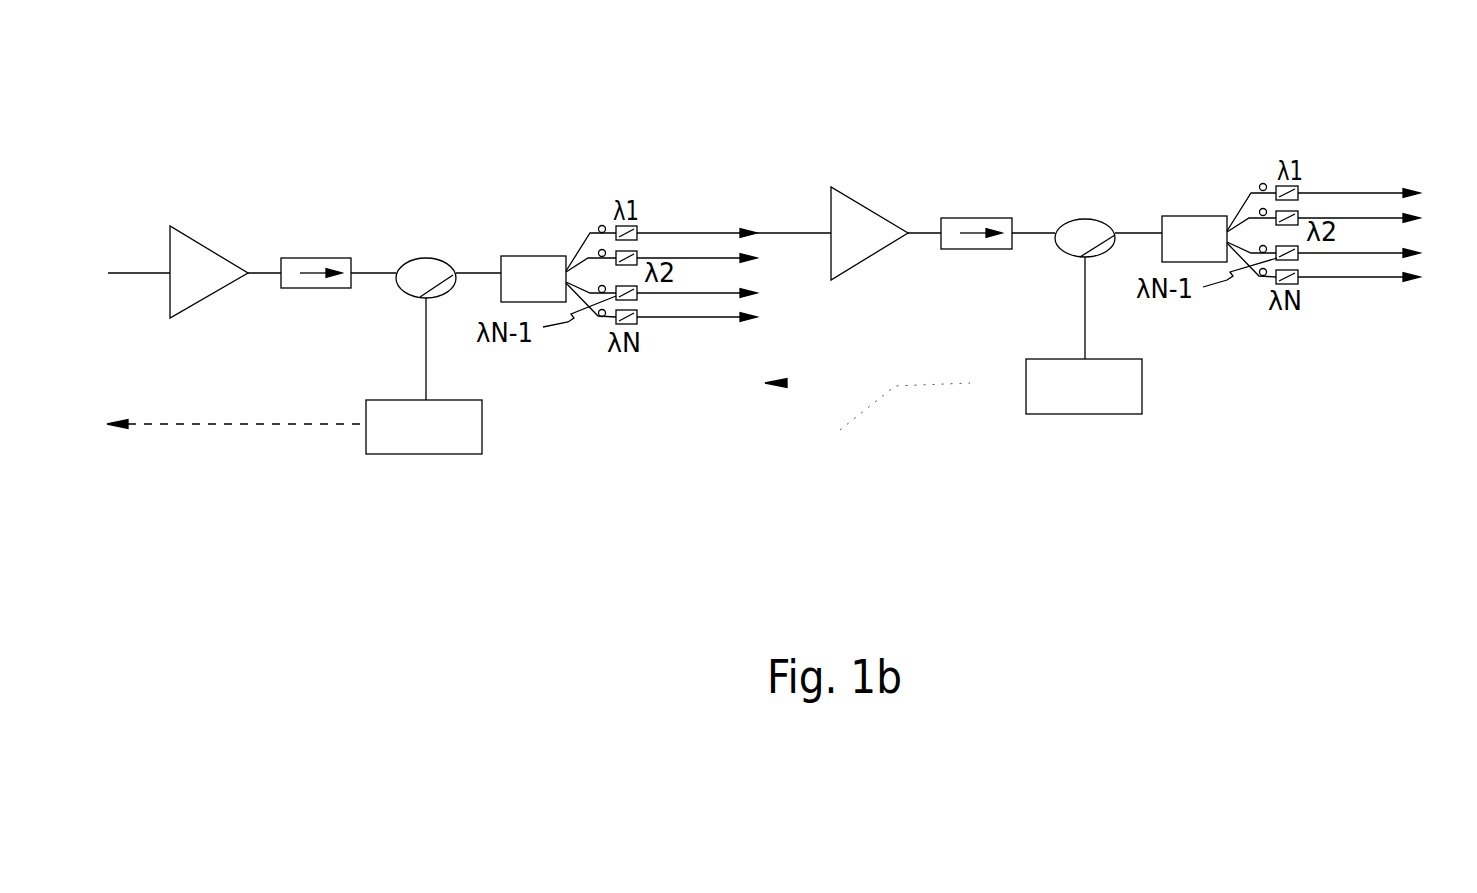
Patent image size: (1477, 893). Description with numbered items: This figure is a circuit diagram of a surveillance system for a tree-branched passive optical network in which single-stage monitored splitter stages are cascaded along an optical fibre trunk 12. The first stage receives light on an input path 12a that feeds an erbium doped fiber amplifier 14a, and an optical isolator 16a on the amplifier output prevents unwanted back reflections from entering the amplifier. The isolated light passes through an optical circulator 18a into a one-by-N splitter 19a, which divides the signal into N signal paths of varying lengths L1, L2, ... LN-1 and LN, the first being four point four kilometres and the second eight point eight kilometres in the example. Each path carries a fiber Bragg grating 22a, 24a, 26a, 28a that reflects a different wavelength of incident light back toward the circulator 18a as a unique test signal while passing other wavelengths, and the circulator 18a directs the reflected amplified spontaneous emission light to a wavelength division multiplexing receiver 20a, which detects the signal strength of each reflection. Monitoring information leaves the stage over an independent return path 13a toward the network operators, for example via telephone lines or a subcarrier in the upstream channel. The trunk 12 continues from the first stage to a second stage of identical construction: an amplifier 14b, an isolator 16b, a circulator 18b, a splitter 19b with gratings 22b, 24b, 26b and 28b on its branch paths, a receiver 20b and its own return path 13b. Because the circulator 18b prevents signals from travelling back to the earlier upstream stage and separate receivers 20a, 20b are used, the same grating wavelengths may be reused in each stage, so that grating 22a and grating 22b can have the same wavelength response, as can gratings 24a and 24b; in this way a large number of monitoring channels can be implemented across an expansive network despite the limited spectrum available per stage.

The optical fibre trunk 12 is at (800, 233).
The input path 12a is at (123, 272).
The erbium doped fiber amplifier 14a is at (207, 253).
The optical isolator 16a is at (313, 260).
The optical circulator 18a is at (407, 290).
The 1×N splitter 19a is at (538, 268).
The WDM receiver 20a is at (407, 443).
The return monitoring signal path 13a is at (240, 426).
The grating 22a is at (637, 227).
The second grating 24a is at (637, 253).
The grating 26a is at (637, 294).
The grating 28a is at (637, 318).
The erbium doped fiber amplifier 14b is at (868, 210).
The optical isolator 16b is at (975, 218).
The optical circulator 18b is at (1067, 242).
The 1×N splitter 19b is at (1198, 225).
The WDM receiver 20b is at (1067, 400).
The return monitoring signal path 13b is at (867, 418).
The grating 22b is at (1298, 185).
The grating 24b is at (1298, 213).
The grating 26b is at (1298, 254).
The grating 28b is at (1298, 278).
The first signal path length L1 is at (602, 225).
The second signal path length L2 is at (600, 250).
The (N−1)th signal path length LN-1 is at (600, 286).
The Nth signal path length LN is at (599, 315).